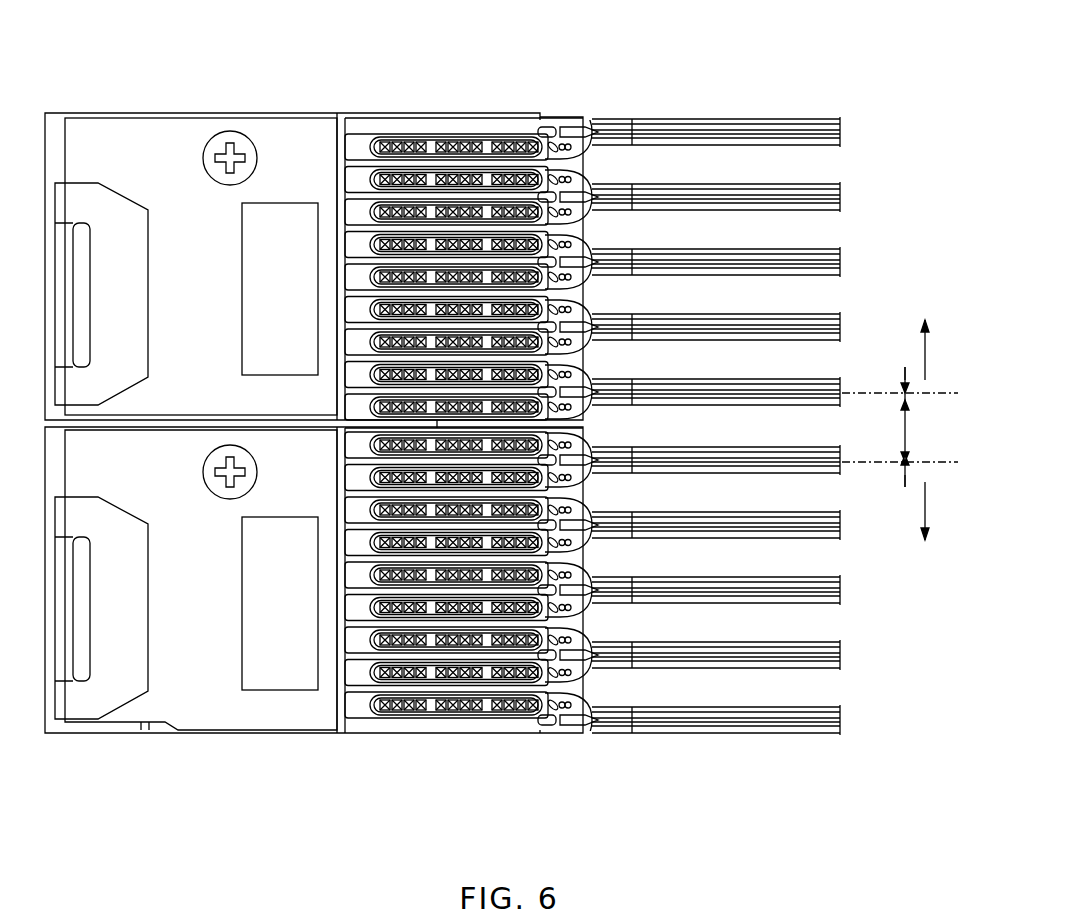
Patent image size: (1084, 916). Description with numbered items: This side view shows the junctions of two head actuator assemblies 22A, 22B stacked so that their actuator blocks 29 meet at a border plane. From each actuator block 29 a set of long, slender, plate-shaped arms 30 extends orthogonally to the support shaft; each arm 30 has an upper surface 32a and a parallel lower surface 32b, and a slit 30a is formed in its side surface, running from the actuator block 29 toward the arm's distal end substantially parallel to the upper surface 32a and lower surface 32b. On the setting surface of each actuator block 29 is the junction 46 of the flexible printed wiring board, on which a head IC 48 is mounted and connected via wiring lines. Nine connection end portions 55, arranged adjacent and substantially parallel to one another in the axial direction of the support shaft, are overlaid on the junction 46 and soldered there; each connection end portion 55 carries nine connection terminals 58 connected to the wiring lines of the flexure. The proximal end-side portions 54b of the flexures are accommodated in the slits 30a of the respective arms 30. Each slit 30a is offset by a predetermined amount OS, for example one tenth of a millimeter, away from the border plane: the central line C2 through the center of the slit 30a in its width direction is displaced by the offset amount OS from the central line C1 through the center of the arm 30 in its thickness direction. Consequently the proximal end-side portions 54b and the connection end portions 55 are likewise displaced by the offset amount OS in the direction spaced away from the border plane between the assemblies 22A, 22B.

The first connector 22A is at (514, 215).
The second connector 22B is at (628, 765).
The actuator block 29 is at (130, 113).
The junction 46 is at (288, 125).
The head IC 48 is at (240, 242).
The connection end portion 55 is at (340, 207).
The connection terminals 58 is at (415, 140).
The arm 30 is at (749, 425).
The slit 30a is at (822, 120).
The upper surface 32a is at (780, 120).
The lower surface 32b is at (770, 144).
The proximal end-side portion 54b is at (680, 120).
The offset amount OS is at (901, 426).
The central line C1 is at (948, 397).
The central line C2 is at (934, 393).